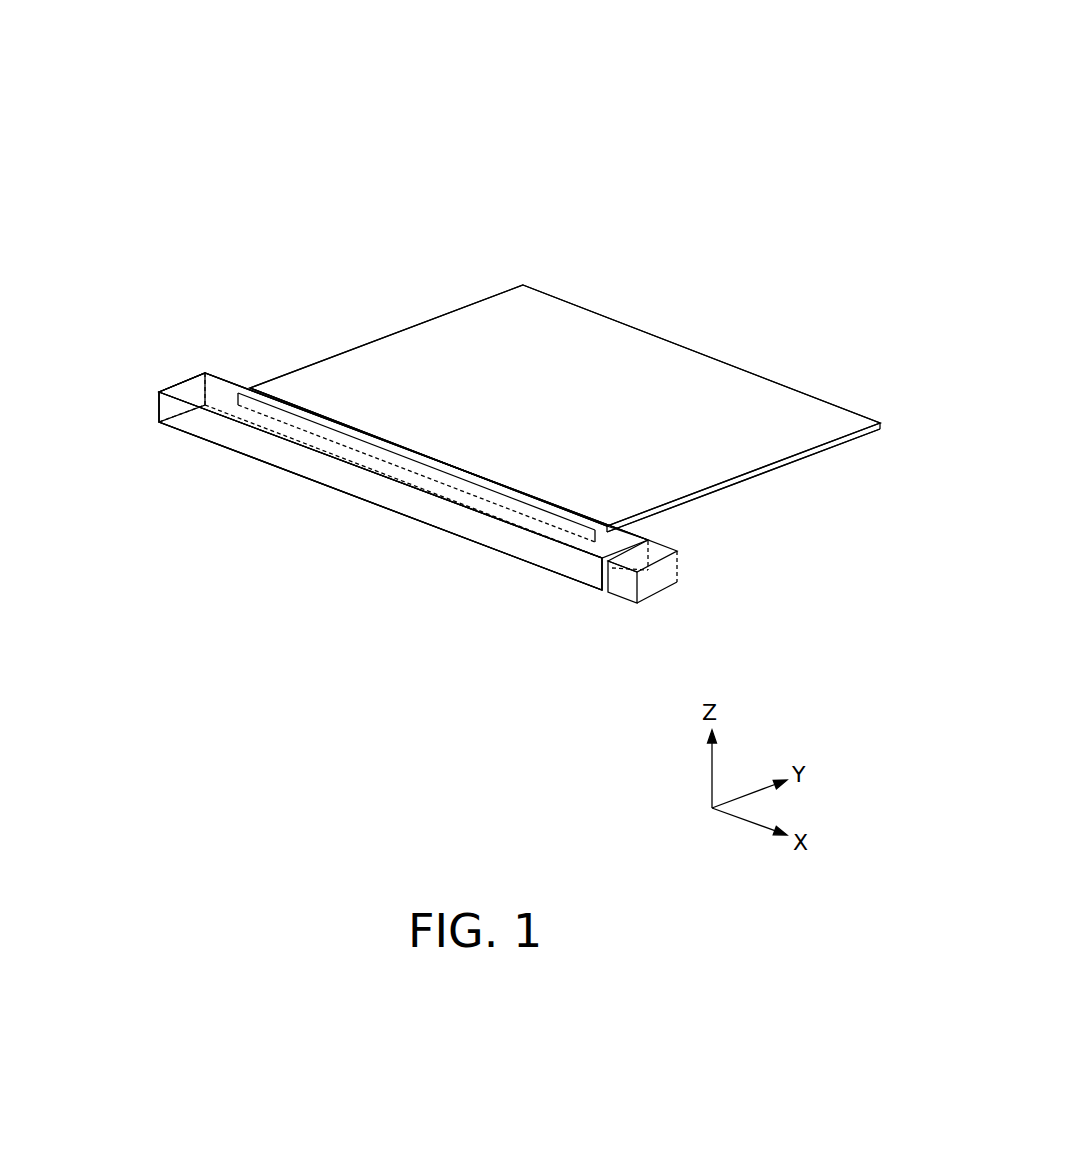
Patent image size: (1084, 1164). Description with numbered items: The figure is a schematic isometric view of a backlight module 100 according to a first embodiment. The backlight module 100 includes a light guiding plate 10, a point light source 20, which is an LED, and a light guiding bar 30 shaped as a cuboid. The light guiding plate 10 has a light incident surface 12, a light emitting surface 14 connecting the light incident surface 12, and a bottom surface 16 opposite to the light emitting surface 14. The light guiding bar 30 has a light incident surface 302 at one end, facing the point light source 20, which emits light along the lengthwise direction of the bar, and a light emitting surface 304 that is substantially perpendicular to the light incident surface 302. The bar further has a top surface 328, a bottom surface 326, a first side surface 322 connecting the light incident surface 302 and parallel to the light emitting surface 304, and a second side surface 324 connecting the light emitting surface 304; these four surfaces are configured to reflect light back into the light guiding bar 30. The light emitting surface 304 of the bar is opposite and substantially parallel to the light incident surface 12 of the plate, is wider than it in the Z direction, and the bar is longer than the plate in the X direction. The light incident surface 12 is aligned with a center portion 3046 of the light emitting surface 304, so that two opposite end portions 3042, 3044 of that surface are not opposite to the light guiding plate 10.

The backlight module 100 is at (433, 62).
The light guiding plate 10 is at (654, 366).
The light incident surface 12 is at (272, 412).
The light emitting surface 14 is at (470, 338).
The bottom surface 16 is at (815, 471).
The point light source 20 is at (657, 579).
The light guiding bar 30 is at (446, 523).
The light incident surface 302 is at (597, 573).
The light emitting surface 304 is at (661, 534).
The end portion 3042 is at (642, 524).
The end portion 3044 is at (230, 367).
The center portion 3046 is at (404, 430).
The first side surface 322 is at (245, 442).
The second side surface 324 is at (175, 373).
The bottom surface 326 is at (177, 445).
The top surface 328 is at (200, 385).